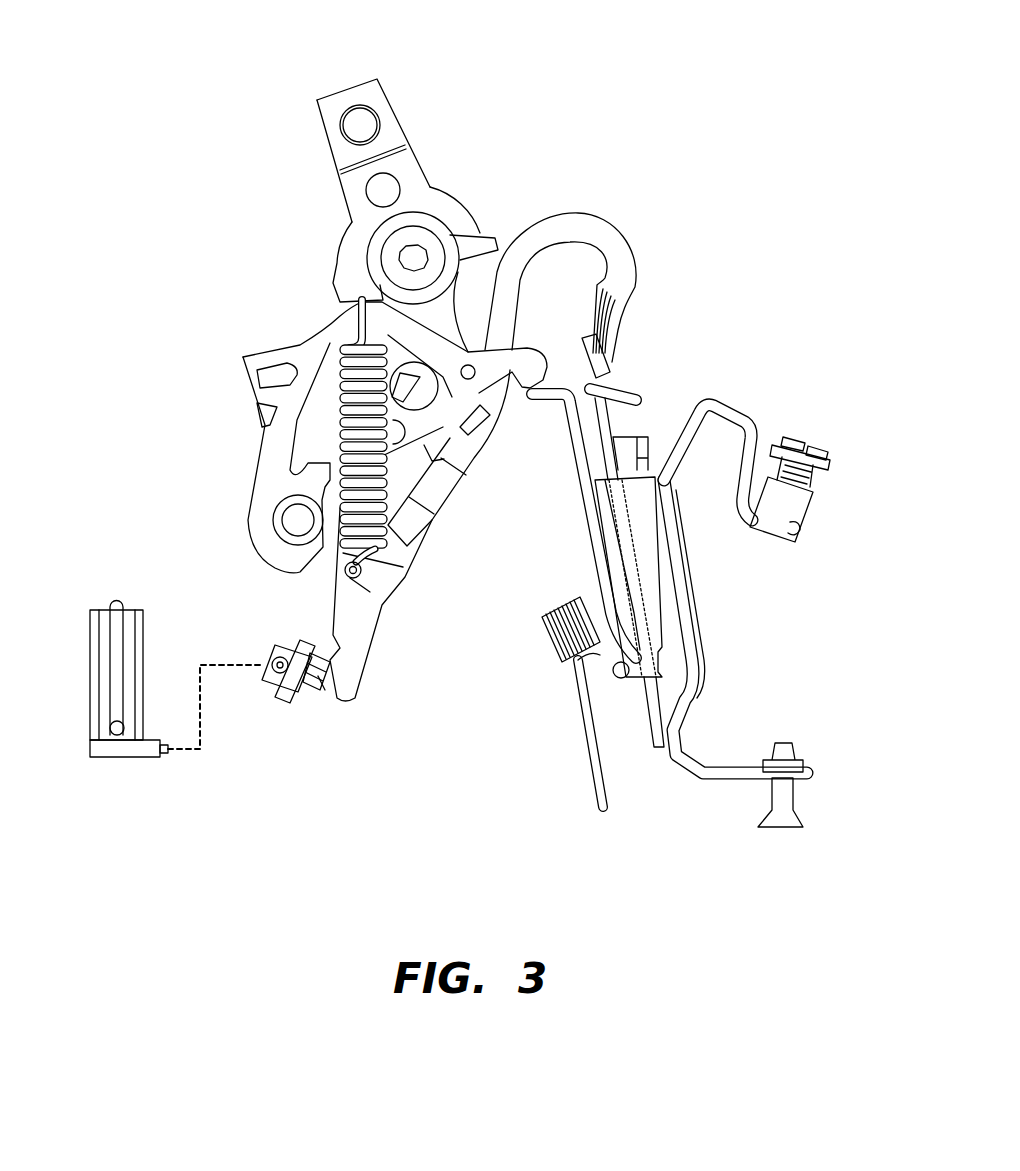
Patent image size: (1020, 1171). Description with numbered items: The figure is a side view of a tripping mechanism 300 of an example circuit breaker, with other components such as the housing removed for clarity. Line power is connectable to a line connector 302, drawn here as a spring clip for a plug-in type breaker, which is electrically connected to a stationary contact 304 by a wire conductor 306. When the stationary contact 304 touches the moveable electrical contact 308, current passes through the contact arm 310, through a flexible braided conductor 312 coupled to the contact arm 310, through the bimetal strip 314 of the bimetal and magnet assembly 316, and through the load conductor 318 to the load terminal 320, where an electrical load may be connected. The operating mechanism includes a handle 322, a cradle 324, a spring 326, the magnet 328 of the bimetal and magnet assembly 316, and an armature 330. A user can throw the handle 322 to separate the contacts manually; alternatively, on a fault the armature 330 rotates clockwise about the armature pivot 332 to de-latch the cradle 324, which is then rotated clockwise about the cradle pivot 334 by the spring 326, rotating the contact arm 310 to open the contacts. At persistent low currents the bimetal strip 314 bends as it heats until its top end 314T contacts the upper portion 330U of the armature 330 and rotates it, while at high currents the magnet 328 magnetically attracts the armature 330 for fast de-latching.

The tripping mechanism 300 is at (686, 112).
The line connector 302 is at (147, 607).
The stationary contact 304 is at (306, 693).
The wire conductor 306 is at (200, 720).
The moveable electrical contact 308 is at (322, 682).
The contact arm 310 is at (382, 607).
The flexible conductor 312 is at (577, 226).
The bimetal strip 314 is at (612, 430).
The top end of bimetal strip 314T is at (640, 418).
The bimetal and magnet assembly 316 is at (668, 572).
The load conductor 318 is at (702, 628).
The load terminal 320 is at (770, 533).
The handle 322 is at (397, 114).
The cradle 324 is at (317, 323).
The spring 326 is at (337, 437).
The magnet 328 is at (640, 522).
The armature 330 is at (577, 463).
The upper portion of armature 330U is at (612, 350).
The armature pivot 332 is at (627, 677).
The cradle pivot 334 is at (270, 522).